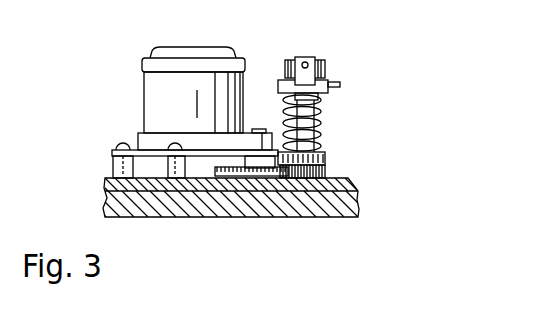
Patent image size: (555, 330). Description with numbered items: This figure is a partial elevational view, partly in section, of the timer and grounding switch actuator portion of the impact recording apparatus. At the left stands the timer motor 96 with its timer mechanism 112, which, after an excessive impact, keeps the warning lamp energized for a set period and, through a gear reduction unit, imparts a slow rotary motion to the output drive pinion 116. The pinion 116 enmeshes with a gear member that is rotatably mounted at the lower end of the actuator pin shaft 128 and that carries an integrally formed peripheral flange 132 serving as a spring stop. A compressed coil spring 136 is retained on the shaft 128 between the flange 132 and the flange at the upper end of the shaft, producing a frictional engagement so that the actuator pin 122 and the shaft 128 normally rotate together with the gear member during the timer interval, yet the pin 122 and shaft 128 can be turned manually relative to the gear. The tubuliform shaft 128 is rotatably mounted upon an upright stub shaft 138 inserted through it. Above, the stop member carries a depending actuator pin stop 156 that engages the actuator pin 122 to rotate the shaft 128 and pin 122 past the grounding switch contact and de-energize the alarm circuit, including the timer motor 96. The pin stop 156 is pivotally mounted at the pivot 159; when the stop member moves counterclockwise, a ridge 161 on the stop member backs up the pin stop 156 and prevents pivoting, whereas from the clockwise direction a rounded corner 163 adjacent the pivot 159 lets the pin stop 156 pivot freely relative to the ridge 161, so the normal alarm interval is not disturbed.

The timer motor 96 is at (142, 86).
The timer mechanism 112 is at (142, 117).
The output drive pinion 116 is at (264, 180).
The actuator pin 122 is at (341, 84).
The actuator pin shaft 128 is at (320, 132).
The peripheral flange 132 is at (326, 160).
The compressed coil spring 136 is at (322, 136).
The stub shaft 138 is at (322, 99).
The actuator pin stop 156 is at (322, 68).
The pivot 159 is at (308, 64).
The ridge 161 is at (285, 60).
The rounded corner 163 is at (298, 57).